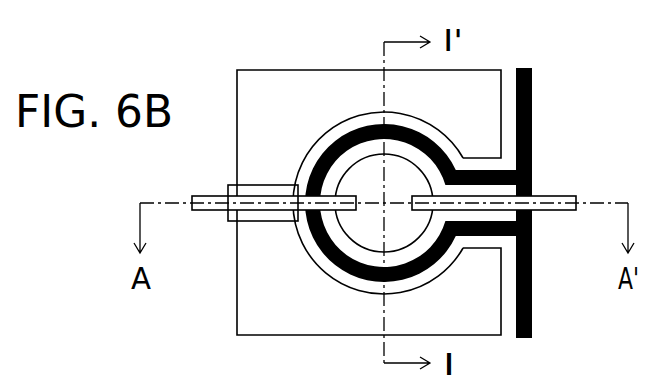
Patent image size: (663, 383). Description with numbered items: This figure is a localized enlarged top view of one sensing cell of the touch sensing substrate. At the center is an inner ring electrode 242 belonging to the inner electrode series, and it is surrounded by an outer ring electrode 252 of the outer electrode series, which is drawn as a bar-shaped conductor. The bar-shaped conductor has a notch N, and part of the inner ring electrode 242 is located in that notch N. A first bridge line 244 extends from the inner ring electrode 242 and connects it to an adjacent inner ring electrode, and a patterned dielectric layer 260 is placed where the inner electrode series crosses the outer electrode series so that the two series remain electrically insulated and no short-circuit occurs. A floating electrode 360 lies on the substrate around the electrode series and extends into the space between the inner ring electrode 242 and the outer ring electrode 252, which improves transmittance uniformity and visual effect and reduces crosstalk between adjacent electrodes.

The outer ring electrode 252 is at (456, 86).
The inner ring electrode 242 is at (402, 175).
The floating electrode 360 is at (532, 118).
The first bridge line 244 is at (514, 196).
The patterned dielectric layer 260 is at (227, 192).
The notch N is at (436, 267).